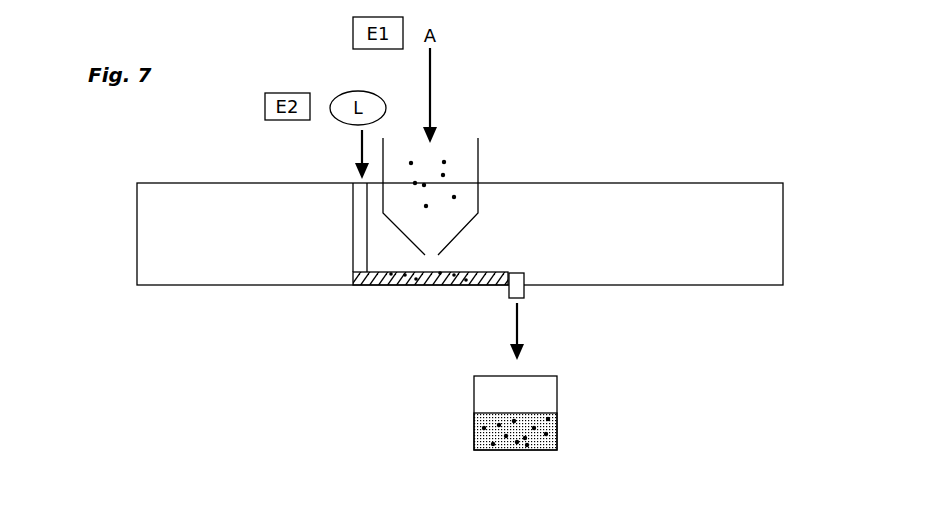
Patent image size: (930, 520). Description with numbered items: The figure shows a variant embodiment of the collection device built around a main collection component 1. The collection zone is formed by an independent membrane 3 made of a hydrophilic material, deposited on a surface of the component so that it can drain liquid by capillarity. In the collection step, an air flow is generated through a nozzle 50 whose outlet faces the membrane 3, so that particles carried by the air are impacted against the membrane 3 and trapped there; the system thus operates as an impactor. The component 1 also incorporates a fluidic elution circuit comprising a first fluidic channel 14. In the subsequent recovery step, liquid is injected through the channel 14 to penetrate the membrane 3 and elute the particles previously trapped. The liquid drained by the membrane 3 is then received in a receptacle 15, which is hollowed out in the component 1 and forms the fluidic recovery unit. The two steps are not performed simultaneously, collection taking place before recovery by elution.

The main collection component 1 is at (609, 183).
The membrane 3 is at (382, 285).
The first fluidic channel 14 is at (355, 207).
The receptacle 15 is at (557, 400).
The nozzle 50 is at (478, 170).